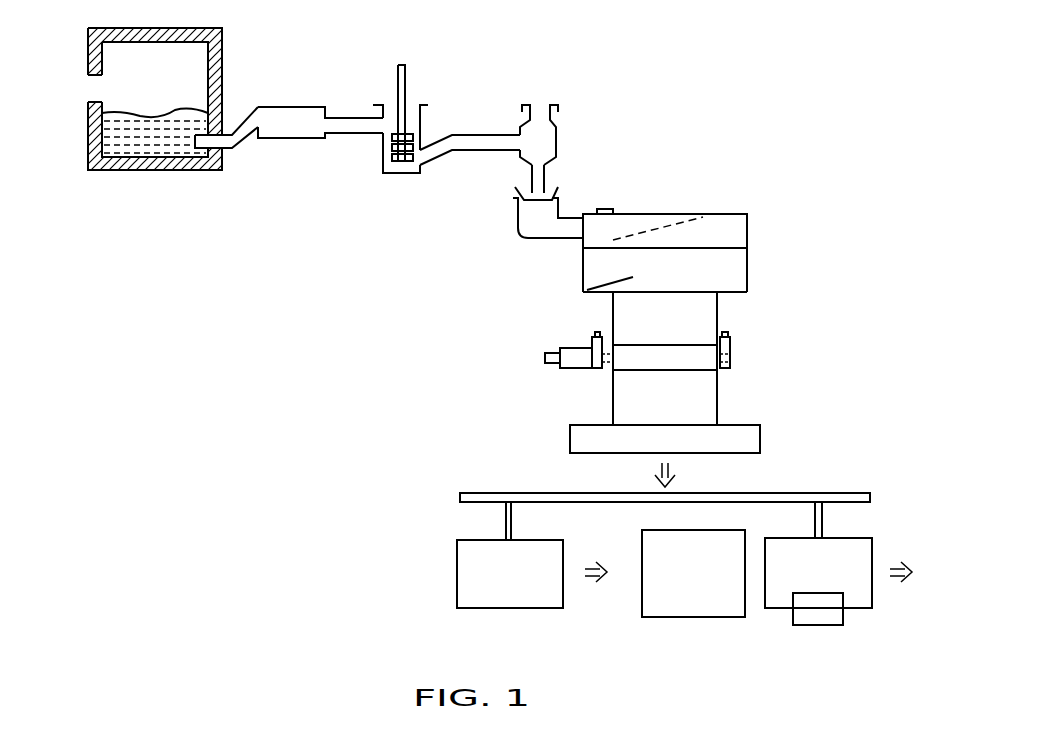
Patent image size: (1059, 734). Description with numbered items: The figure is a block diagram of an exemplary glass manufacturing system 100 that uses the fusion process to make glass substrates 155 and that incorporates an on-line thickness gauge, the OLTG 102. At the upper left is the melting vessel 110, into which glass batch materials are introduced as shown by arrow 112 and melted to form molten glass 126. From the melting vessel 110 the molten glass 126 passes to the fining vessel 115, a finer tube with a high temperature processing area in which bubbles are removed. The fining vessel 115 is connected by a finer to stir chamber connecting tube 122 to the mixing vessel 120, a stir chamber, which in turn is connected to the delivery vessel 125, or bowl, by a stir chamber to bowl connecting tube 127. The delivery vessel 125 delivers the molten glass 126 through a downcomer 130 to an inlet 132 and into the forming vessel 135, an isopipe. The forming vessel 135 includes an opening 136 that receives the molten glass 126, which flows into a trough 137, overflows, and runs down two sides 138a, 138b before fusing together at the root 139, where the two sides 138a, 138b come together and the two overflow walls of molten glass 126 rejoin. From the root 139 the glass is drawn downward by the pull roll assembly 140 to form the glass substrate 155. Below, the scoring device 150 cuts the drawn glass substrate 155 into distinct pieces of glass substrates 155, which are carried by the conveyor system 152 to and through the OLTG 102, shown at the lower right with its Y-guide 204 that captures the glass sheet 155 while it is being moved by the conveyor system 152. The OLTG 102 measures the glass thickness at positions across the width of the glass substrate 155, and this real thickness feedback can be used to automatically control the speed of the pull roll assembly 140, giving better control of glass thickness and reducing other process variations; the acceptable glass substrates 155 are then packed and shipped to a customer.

The glass manufacturing system 100 is at (780, 38).
The melting vessel 110 is at (152, 27).
The arrow 112 is at (108, 89).
The fining vessel 115 is at (290, 107).
The mixing vessel 120 is at (423, 121).
The finer to stir chamber connecting tube 122 is at (365, 140).
The delivery vessel 125 is at (558, 132).
The molten glass 126 is at (177, 110).
The stir chamber to bowl connecting tube 127 is at (493, 155).
The downcomer 130 is at (547, 177).
The inlet 132 is at (526, 234).
The forming vessel 135 is at (749, 230).
The opening 136 is at (583, 242).
The trough 137 is at (643, 223).
The side 138a is at (587, 290).
The side 138b is at (583, 277).
The root 139 is at (685, 293).
The pull roll assembly 140 is at (731, 353).
The scoring device 150 is at (570, 440).
The conveyor system 152 is at (473, 493).
The glass substrate 155 is at (612, 398).
The Y-guide 204 is at (695, 618).
The OLTG 102 is at (810, 626).